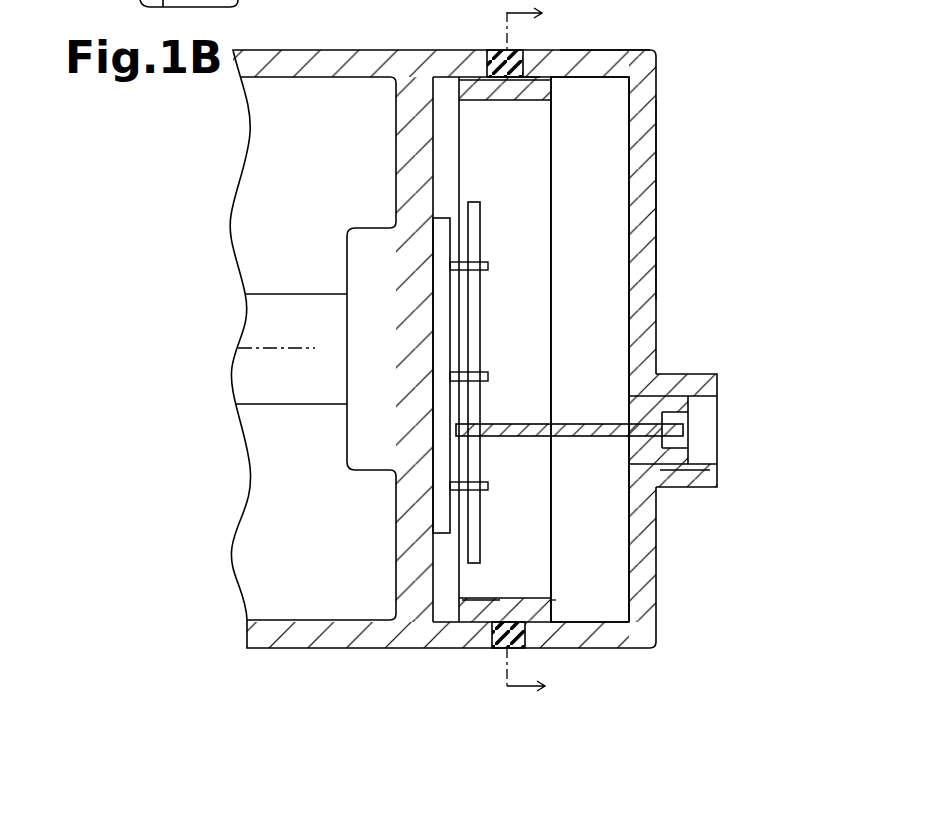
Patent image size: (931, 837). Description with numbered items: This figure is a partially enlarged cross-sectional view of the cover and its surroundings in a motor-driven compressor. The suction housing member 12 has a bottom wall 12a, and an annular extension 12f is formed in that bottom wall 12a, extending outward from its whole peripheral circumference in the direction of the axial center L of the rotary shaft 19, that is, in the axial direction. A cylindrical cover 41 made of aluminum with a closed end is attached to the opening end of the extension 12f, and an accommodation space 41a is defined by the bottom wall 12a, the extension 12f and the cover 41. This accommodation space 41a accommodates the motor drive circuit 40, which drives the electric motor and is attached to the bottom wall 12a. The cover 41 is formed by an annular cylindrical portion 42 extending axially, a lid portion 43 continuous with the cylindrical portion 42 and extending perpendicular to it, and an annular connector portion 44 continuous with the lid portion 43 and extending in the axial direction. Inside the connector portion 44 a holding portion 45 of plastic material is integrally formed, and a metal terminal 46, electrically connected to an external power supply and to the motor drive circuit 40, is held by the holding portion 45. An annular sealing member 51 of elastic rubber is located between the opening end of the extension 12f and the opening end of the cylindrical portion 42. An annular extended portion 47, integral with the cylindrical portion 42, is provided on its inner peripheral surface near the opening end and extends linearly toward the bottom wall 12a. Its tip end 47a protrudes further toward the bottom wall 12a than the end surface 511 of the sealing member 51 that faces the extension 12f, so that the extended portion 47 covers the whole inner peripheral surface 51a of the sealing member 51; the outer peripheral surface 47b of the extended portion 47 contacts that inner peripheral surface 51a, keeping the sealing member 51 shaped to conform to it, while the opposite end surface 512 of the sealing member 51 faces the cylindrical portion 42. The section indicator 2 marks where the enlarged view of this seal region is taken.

The suction housing member 12 is at (297, 55).
The bottom wall 12a is at (397, 175).
The annular extension 12f is at (465, 55).
The rotary shaft 19 is at (297, 300).
The axial center L is at (250, 350).
The motor drive circuit 40 is at (482, 229).
The cover 41 is at (656, 76).
The accommodation space 41a is at (616, 284).
The cylindrical portion 42 is at (598, 58).
The lid portion 43 is at (650, 166).
The connector portion 44 is at (695, 380).
The holding portion 45 is at (668, 470).
The metal terminal 46 is at (580, 436).
The extended portion 47 is at (490, 95).
The tip end 47a is at (458, 88).
The outer peripheral surface 47b is at (472, 618).
The sealing member 51 is at (513, 607).
The inner peripheral surface 51a is at (510, 78).
The end surface 511 is at (480, 640).
The end surface 512 is at (552, 603).
The section line 2 is at (537, 352).